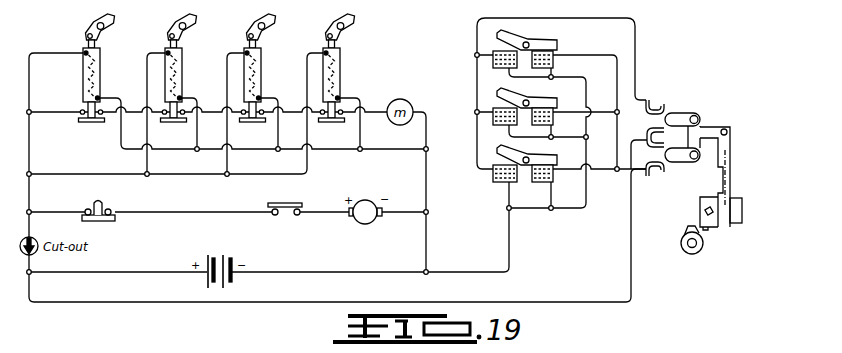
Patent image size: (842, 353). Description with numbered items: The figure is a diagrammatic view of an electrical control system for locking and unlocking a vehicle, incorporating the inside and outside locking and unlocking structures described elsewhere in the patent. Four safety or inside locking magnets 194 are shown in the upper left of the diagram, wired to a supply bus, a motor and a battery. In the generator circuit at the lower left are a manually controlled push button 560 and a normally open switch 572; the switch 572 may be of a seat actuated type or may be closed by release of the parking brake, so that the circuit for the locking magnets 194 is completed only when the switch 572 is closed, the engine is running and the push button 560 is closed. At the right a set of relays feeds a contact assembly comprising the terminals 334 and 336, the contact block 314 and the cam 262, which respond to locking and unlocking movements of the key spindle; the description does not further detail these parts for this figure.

The safety or inside locking magnets 194 is at (227, 68).
The manually controlled push button 560 is at (102, 204).
The normally open switch 572 is at (286, 207).
The contact terminal 334 is at (677, 112).
The contact terminal arm 336 is at (677, 152).
The contact block 314 is at (713, 214).
The cam roller 262 is at (700, 252).